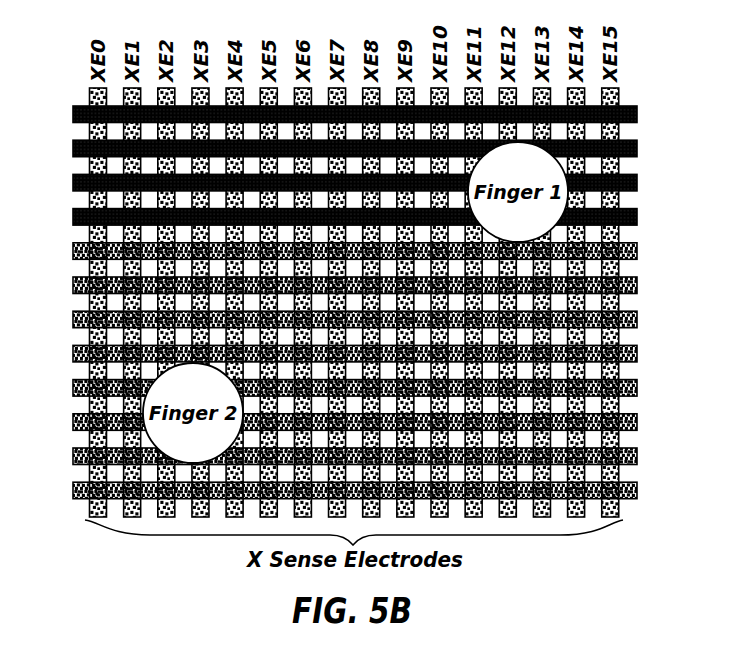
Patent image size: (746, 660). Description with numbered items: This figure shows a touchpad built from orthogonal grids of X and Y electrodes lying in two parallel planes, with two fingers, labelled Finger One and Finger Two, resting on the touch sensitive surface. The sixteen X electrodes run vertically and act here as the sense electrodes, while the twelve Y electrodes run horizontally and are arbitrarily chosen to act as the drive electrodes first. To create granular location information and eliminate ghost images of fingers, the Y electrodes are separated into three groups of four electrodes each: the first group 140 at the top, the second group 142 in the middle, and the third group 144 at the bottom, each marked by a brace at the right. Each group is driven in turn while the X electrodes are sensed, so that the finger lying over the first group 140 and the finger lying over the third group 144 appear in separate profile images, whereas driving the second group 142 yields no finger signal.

The first group of Y electrodes 140 is at (642, 100).
The second group of Y electrodes 142 is at (642, 237).
The third group of Y electrodes 144 is at (642, 373).